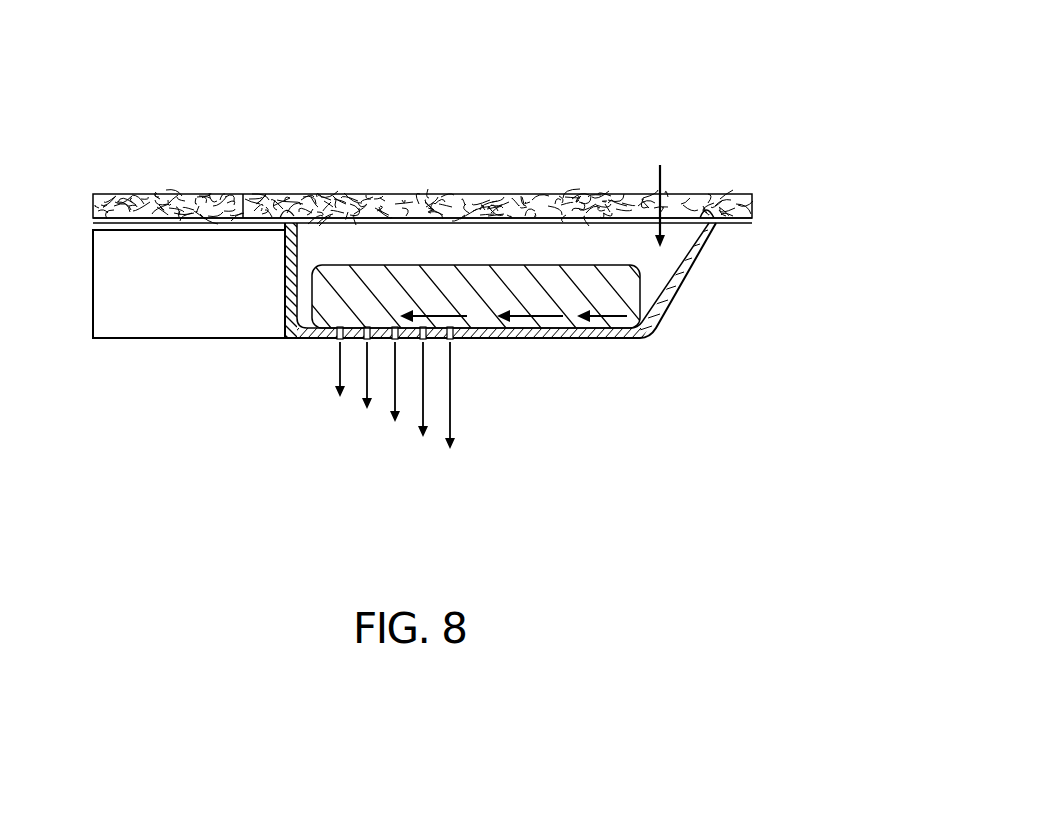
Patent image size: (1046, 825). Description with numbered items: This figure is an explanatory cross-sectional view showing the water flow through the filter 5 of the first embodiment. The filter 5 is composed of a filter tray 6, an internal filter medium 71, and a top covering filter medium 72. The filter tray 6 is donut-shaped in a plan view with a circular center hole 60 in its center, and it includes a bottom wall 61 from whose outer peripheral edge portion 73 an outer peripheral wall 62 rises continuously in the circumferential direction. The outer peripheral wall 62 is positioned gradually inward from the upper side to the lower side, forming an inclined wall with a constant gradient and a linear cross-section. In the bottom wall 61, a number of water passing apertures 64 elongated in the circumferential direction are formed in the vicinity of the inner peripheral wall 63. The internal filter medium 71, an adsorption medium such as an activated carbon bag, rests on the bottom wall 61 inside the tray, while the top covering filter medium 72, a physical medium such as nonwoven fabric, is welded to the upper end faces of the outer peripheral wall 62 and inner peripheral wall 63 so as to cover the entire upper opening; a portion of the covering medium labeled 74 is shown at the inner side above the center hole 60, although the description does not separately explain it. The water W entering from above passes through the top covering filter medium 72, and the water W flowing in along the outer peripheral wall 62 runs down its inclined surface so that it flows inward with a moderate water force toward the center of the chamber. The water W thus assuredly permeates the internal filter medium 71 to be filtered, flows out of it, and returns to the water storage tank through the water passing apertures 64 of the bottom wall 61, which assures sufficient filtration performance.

The filter 5 is at (586, 150).
The filter tray 6 is at (449, 284).
The center hole 60 is at (155, 305).
The bottom wall 61 is at (598, 330).
The outer peripheral wall 62 is at (680, 288).
The inner peripheral wall 63 is at (284, 295).
The water passing aperture 64 is at (395, 337).
The internal filter medium 71 is at (455, 293).
The top covering filter medium 72 is at (338, 197).
The outer peripheral edge portion 73 is at (753, 205).
The fiber layer end portion 74 is at (252, 195).
The water W is at (662, 178).